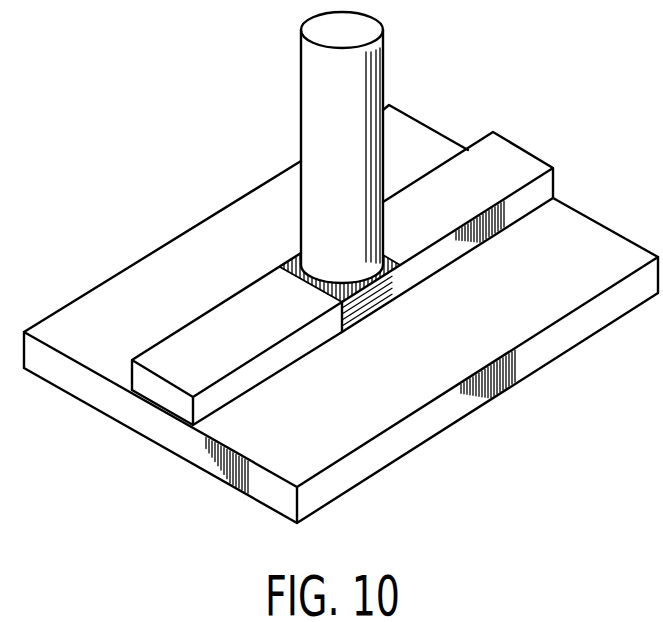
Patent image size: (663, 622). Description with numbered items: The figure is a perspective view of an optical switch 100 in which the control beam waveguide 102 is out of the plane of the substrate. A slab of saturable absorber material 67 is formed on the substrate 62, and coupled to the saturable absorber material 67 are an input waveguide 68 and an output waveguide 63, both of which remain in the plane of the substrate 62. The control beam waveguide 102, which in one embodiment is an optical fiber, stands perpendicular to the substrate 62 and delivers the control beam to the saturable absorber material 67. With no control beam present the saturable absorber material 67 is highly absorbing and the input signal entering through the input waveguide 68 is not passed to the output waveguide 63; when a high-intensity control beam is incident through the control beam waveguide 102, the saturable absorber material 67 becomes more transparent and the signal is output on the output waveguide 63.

The switch 100 is at (341, 278).
The control beam waveguide 102 is at (371, 71).
The substrate 62 is at (418, 427).
The output waveguide 63 is at (528, 203).
The input waveguide 68 is at (203, 406).
The saturable absorber material 67 is at (387, 309).